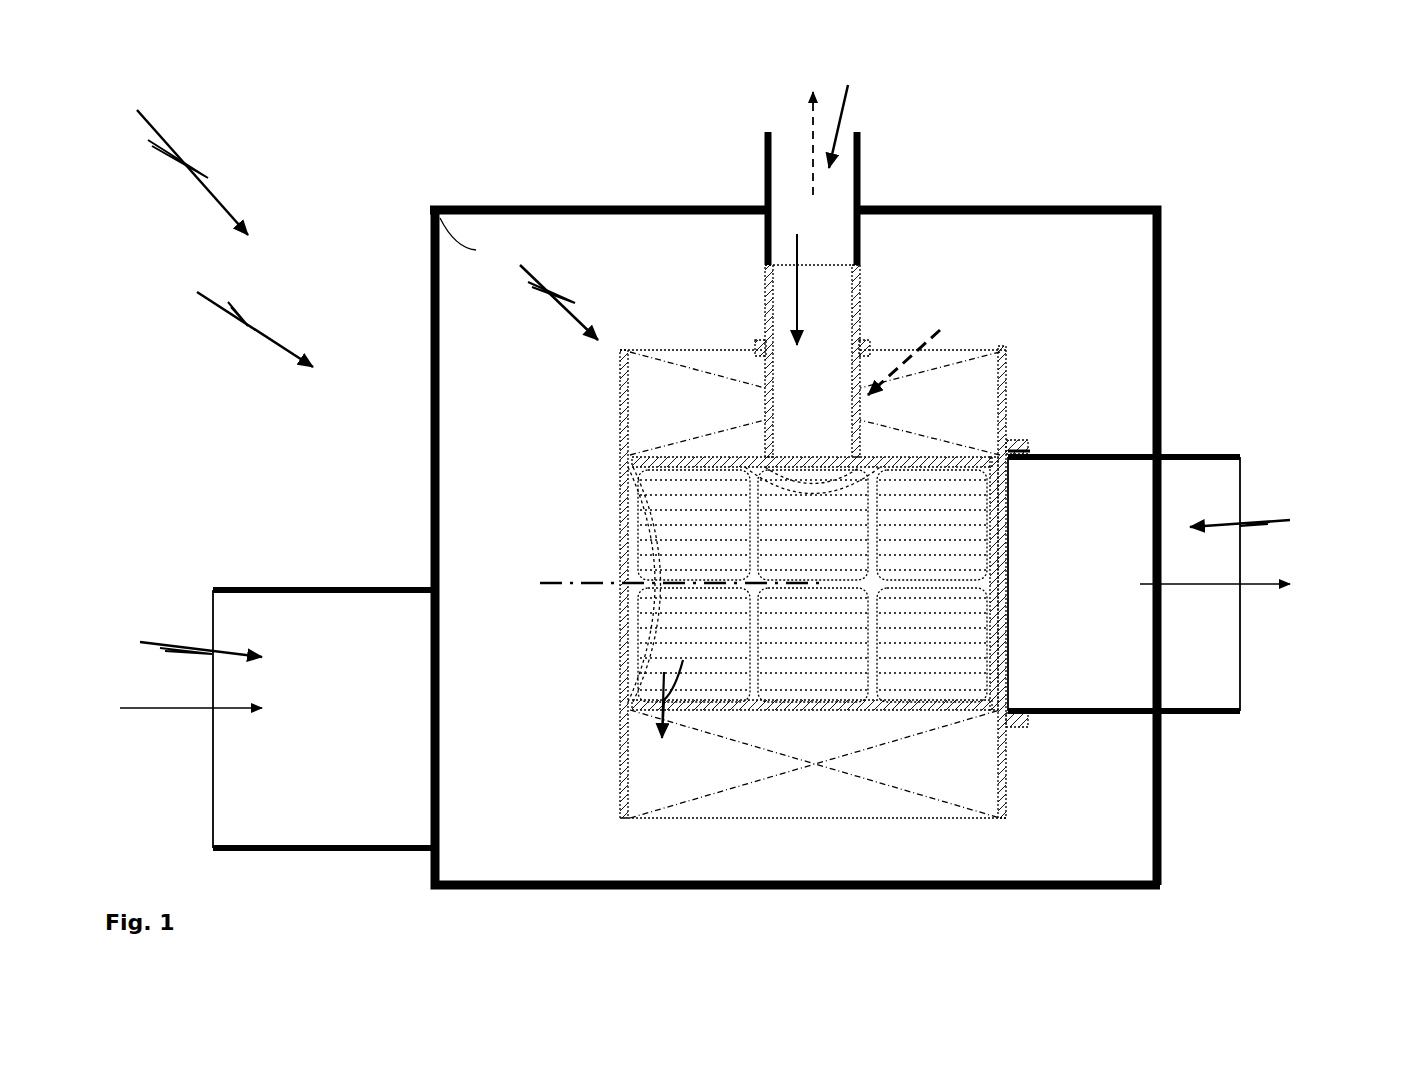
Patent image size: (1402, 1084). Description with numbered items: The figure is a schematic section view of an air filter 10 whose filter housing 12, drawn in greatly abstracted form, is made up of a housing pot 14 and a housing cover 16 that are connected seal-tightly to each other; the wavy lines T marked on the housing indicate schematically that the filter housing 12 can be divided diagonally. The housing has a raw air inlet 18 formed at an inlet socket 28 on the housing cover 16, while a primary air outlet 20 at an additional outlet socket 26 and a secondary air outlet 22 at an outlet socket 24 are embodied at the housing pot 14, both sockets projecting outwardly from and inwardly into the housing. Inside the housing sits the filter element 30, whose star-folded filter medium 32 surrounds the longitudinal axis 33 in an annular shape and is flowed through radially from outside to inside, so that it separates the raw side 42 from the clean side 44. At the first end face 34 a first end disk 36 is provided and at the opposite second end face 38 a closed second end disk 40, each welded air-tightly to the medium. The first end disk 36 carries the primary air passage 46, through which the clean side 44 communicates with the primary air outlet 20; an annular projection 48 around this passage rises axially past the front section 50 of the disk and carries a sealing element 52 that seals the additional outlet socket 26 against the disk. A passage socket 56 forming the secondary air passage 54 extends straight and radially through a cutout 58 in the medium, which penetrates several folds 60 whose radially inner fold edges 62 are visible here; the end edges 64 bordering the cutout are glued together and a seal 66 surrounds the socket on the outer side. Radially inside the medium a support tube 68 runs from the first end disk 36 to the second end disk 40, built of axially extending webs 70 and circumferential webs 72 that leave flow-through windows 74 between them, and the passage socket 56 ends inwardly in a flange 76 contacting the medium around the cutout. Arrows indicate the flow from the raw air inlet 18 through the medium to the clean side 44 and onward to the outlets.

The air filter 10 is at (177, 161).
The filter housing 12 is at (235, 319).
The housing pot 14 is at (432, 466).
The housing cover 16 is at (1045, 205).
The raw air inlet 18 is at (180, 669).
The primary air outlet 20 is at (1254, 546).
The secondary air outlet 22 is at (841, 126).
The outlet socket 24 is at (768, 170).
The additional outlet socket 26 is at (1215, 456).
The inlet socket 28 is at (278, 588).
The filter element 30 is at (519, 279).
The filter medium 32 is at (712, 800).
The longitudinal axis 33 is at (572, 583).
The first end face 34 is at (1040, 778).
The first end disk 36 is at (1003, 803).
The second end face 38 is at (585, 742).
The second end disk 40 is at (615, 785).
The raw side 42 is at (838, 853).
The clean side 44 is at (828, 595).
The primary air passage 46 is at (1000, 588).
The annular projection 48 is at (1020, 444).
The front section 50 is at (1005, 373).
The sealing element 52 is at (1030, 452).
The secondary air passage 54 is at (795, 234).
The passage socket 56 is at (765, 302).
The cutout 58 is at (920, 350).
The folds 60 is at (670, 606).
The fold edges 62 is at (812, 715).
The end edges 64 is at (765, 432).
The seal 66 is at (866, 350).
The support tube 68 is at (665, 460).
The axially extending webs 70 is at (937, 583).
The webs extending in circumferential direction 72 is at (875, 628).
The windows 74 is at (960, 494).
The flange 76 is at (782, 478).
The housing tank T is at (433, 208).